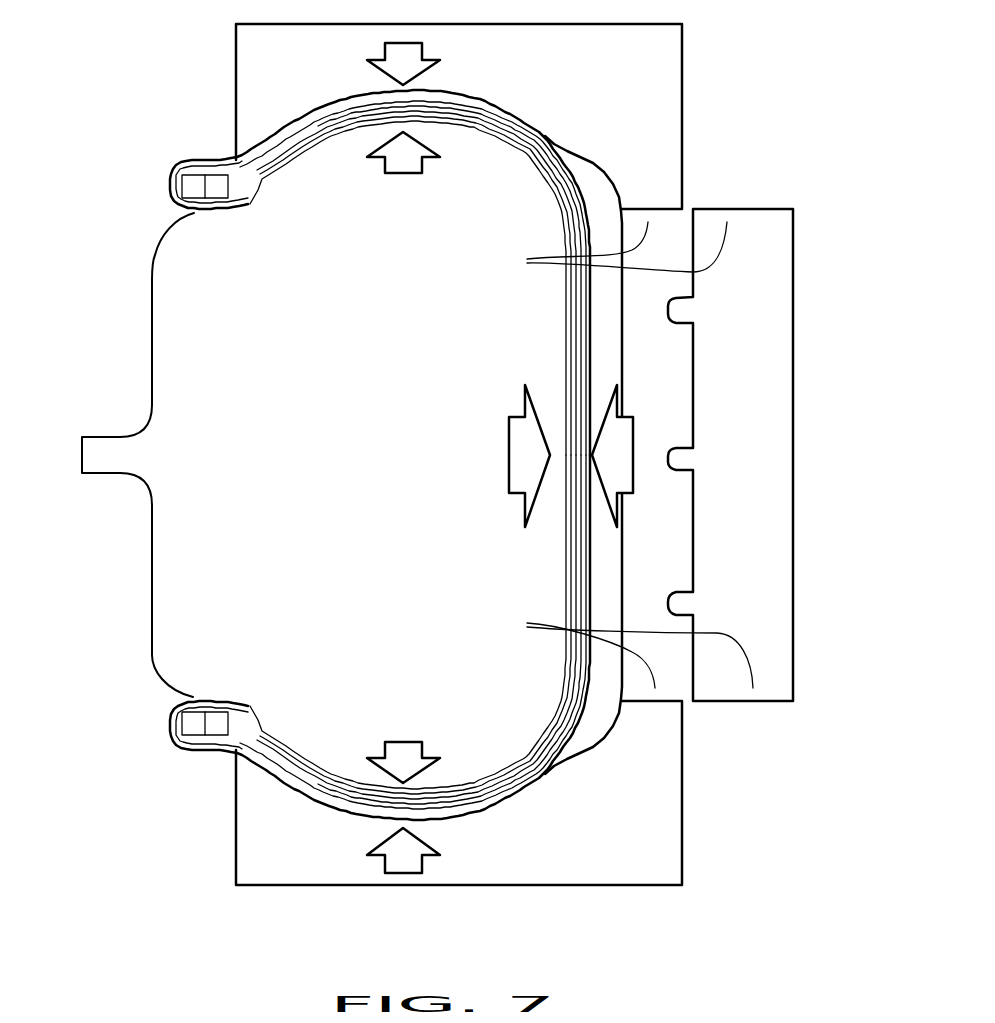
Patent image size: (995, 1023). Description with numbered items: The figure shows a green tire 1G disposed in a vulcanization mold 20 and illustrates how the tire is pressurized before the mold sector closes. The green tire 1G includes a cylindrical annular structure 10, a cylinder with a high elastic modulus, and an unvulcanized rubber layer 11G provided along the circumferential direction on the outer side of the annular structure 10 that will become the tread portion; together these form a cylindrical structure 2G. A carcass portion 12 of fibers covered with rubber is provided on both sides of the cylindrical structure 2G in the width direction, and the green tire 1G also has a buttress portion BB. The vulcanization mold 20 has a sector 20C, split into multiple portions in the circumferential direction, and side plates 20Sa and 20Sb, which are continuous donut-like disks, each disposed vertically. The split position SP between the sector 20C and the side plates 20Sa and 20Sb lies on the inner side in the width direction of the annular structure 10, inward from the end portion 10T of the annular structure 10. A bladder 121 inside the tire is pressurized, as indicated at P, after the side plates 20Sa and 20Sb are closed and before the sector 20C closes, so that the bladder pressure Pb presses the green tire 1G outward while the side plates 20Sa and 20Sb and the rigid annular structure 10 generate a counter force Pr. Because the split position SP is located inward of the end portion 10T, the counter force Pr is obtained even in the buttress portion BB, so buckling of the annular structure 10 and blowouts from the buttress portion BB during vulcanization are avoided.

The green tire 1G is at (418, 455).
The cylindrical structure 2G is at (421, 452).
The annular structure 10 is at (590, 662).
The end portion 10T is at (592, 187).
The unvulcanized rubber layer 11G is at (622, 670).
The carcass portion 12 is at (507, 114).
The buttress portion BB is at (538, 191).
The split position SP is at (627, 455).
The vulcanization mold 20 is at (548, 454).
The side plate 20Sa is at (683, 105).
The side plate 20Sb is at (683, 768).
The sector 20C is at (758, 220).
The bladder 121 is at (111, 455).
The pressure supply P is at (72, 455).
The pressure Pb is at (458, 457).
The counter force Pr is at (513, 459).